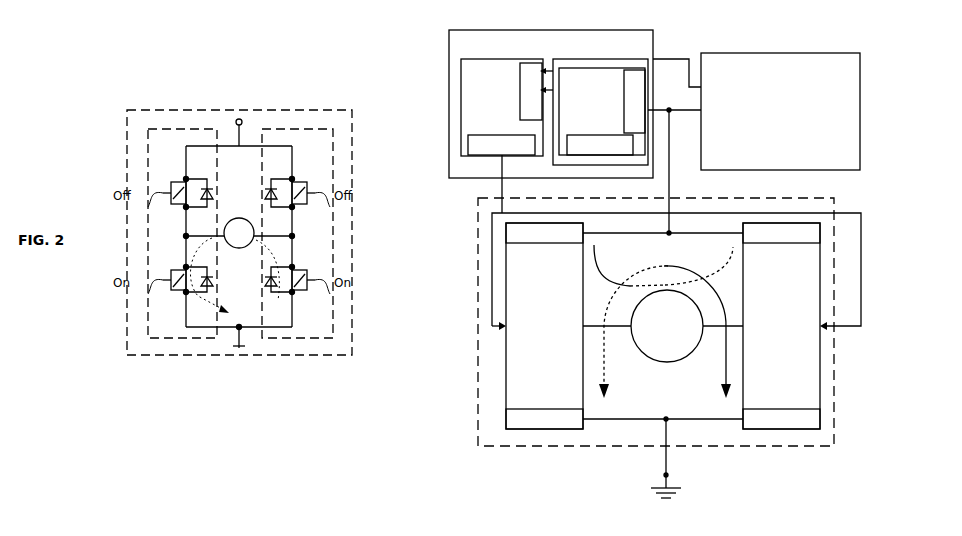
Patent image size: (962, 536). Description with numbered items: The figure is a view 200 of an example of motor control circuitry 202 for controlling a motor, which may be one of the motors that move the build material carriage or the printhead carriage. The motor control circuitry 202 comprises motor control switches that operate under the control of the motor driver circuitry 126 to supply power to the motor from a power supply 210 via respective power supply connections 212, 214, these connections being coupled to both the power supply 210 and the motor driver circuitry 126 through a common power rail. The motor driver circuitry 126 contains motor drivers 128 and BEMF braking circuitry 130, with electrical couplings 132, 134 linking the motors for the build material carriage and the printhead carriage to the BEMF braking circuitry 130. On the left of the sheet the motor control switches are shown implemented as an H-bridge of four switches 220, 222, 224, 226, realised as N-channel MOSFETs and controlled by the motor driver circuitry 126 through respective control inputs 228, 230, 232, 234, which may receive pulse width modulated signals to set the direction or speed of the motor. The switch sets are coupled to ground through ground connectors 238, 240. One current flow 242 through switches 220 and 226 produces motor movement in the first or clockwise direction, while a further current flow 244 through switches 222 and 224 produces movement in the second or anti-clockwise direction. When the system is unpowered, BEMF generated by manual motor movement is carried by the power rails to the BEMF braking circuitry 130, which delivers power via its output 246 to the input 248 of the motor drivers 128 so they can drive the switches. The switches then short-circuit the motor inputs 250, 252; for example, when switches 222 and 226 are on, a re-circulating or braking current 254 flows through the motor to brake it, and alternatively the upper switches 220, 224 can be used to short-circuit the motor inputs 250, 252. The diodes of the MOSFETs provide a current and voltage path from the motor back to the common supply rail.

The view 200 is at (574, 498).
The motor control circuitry 202 is at (882, 91).
The power supply 210 is at (861, 162).
The power supply connection 212 is at (514, 326).
The power supply connection 214 is at (822, 326).
The switch 220 is at (181, 173).
The switch 222 is at (184, 297).
The switch 224 is at (299, 173).
The switch 226 is at (296, 297).
The control input 228 is at (164, 195).
The control input 230 is at (164, 281).
The control input 232 is at (316, 195).
The control input 234 is at (316, 281).
The ground connector 238 is at (510, 431).
The ground connector 240 is at (775, 431).
The current flow 242 is at (606, 262).
The current flow 244 is at (732, 248).
The output 246 is at (577, 157).
The input 248 is at (518, 80).
The motor input 250 is at (633, 332).
The motor input 252 is at (703, 332).
The re-circulating or braking current 254 is at (213, 330).
The motor driver circuitry 126 is at (461, 110).
The motor drivers 128 is at (475, 107).
The BEMF braking circuitry 130 is at (594, 131).
The electrical coupling 132 is at (500, 197).
The electrical coupling 134 is at (445, 212).